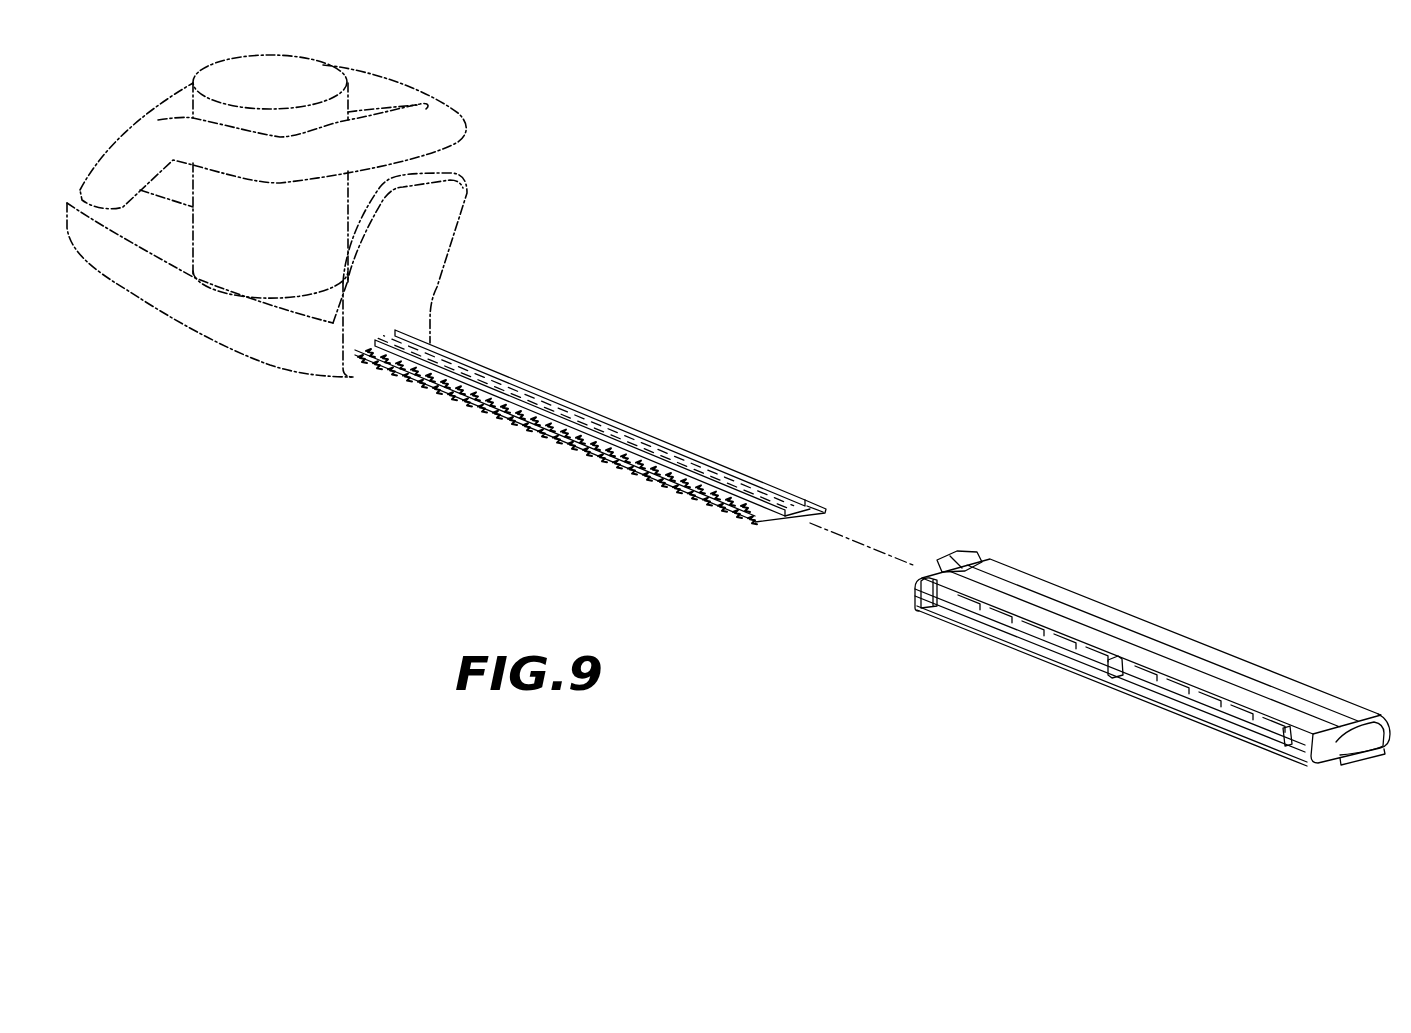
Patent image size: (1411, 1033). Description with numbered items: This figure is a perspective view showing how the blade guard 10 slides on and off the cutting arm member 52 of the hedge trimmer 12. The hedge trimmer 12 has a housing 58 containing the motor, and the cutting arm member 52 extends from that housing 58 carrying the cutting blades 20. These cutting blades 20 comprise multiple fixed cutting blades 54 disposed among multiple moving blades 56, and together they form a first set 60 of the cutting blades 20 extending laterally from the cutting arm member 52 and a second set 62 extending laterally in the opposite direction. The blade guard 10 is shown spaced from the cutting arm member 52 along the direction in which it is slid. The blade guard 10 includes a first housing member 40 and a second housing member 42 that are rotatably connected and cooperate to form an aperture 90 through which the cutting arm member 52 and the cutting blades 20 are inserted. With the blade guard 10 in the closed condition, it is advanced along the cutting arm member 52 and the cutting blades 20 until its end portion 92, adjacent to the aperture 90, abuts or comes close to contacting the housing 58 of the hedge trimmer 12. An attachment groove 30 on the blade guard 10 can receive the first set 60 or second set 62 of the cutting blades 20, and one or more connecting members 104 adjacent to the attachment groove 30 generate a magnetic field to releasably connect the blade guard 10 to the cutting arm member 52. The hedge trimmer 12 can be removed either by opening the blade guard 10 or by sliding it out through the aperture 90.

The blade guard 10 is at (1160, 650).
The hedge trimmer 12 is at (276, 227).
The cutting blades 20 is at (615, 461).
The attachment groove 30 is at (1150, 705).
The first housing member 40 is at (1358, 735).
The second housing member 42 is at (1352, 760).
The cutting arm member 52 is at (637, 437).
The fixed cutting blades 54 is at (774, 526).
The moving blades 56 is at (739, 502).
The housing 58 is at (267, 257).
The first set of the cutting blades 60 is at (821, 497).
The second set of the cutting blades 62 is at (676, 508).
The aperture 90 is at (927, 561).
The end portion 92 is at (952, 553).
The connecting members 104 is at (1012, 632).